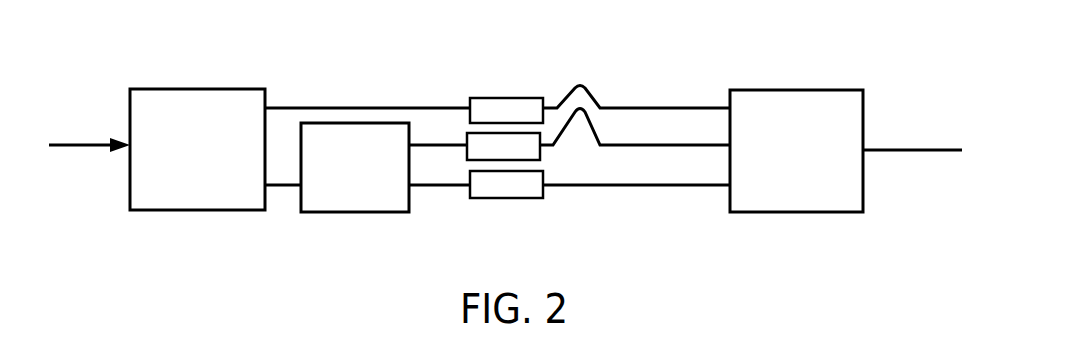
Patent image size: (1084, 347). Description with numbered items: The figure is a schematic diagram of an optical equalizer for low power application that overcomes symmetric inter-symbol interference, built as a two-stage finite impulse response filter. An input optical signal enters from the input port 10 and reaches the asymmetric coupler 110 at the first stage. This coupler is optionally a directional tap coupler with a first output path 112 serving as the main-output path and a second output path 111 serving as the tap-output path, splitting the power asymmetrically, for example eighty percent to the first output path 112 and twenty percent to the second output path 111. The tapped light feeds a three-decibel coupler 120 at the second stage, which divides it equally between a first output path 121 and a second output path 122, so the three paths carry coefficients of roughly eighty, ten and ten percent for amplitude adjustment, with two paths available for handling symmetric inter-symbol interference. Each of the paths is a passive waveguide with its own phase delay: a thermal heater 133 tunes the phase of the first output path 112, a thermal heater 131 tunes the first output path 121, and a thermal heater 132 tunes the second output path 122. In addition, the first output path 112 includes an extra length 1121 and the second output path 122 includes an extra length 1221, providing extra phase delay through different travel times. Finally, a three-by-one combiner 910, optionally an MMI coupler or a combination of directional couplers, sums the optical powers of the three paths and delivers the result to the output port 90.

The input port 10 is at (82, 146).
The asymmetric coupler 110 is at (210, 89).
The second output path 111 is at (287, 187).
The first output path 112 is at (300, 108).
The 3 dB coupler 120 is at (338, 212).
The first output path 121 is at (445, 185).
The second output path 122 is at (427, 145).
The thermal heater 131 is at (527, 195).
The thermal heater 132 is at (537, 152).
The thermal heater 133 is at (508, 105).
The extra length 1121 is at (585, 88).
The extra length 1221 is at (592, 123).
The 3×1 combiner 910 is at (800, 212).
The output port 90 is at (908, 150).